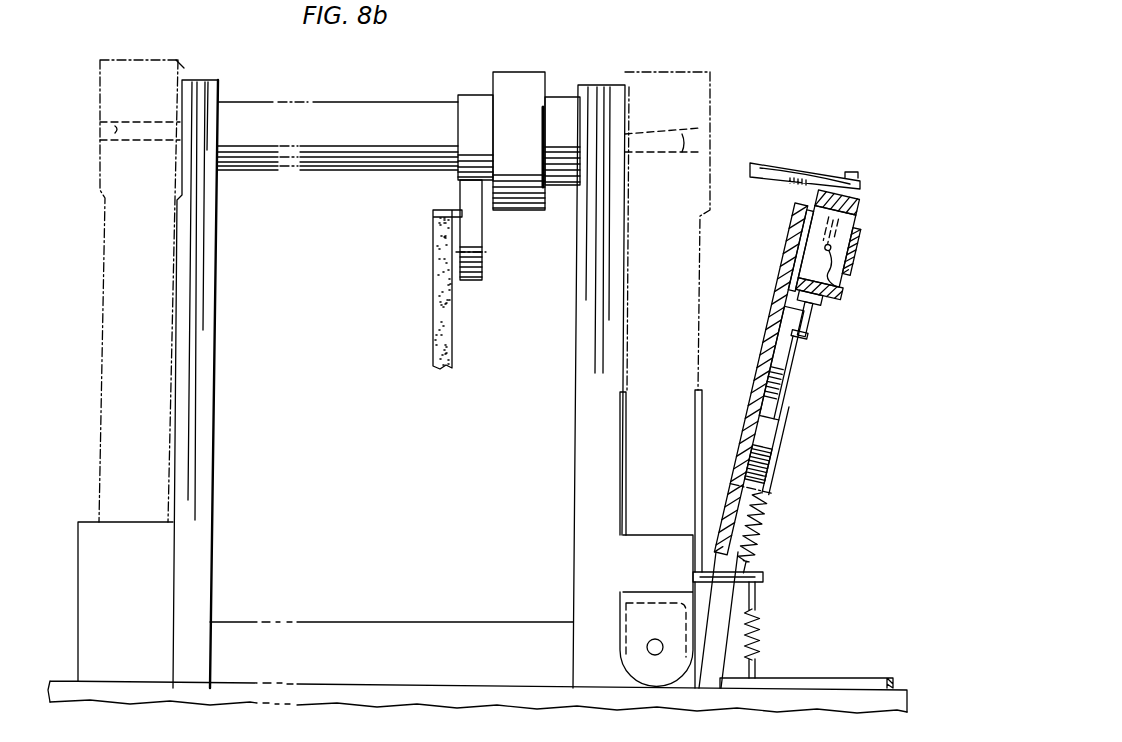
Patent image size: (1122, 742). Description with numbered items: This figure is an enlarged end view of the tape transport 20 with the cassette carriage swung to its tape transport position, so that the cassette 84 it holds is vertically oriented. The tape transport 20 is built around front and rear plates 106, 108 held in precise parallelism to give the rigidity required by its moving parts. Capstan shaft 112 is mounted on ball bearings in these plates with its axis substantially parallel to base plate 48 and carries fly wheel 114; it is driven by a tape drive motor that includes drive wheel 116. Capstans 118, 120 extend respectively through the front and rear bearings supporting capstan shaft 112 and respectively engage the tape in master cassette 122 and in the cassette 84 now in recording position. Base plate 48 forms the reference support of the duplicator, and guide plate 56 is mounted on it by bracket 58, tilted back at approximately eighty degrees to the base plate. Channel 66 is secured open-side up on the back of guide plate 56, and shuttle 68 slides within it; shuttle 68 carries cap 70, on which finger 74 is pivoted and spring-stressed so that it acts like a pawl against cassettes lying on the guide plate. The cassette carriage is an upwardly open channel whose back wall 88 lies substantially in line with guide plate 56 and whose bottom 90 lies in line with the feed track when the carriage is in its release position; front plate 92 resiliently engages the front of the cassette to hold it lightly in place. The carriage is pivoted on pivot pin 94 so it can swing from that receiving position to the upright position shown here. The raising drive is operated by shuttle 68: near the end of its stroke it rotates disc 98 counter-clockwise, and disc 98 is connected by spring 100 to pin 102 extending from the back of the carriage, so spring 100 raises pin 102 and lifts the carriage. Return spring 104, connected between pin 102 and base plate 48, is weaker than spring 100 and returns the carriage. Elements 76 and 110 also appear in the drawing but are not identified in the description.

The capstan 118 is at (127, 125).
The master cassette 122 is at (181, 66).
The capstan shaft 112 is at (377, 107).
The cassette 84 is at (712, 70).
The capstan 120 is at (700, 128).
The finger 74 is at (853, 187).
The cap 70 is at (857, 207).
The shuttle 68 is at (843, 240).
The channel 66 is at (853, 267).
The cord 76 is at (853, 283).
The guide plate 56 is at (770, 317).
The back wall 88 is at (700, 397).
The disc 98 is at (800, 380).
The front plate 106 is at (207, 392).
The rear plate 108 is at (578, 410).
The tape transport 20 is at (426, 447).
The front plate 92 is at (618, 477).
The bottom 90 is at (640, 534).
The spring 100 is at (777, 488).
The pin 102 is at (764, 577).
The cross bar 110 is at (376, 624).
The pivot pin 94 is at (647, 647).
The return spring 104 is at (762, 630).
The bracket 58 is at (855, 677).
The base plate 48 is at (903, 687).
The fly wheel 114 is at (517, 211).
The drive wheel 116 is at (483, 279).